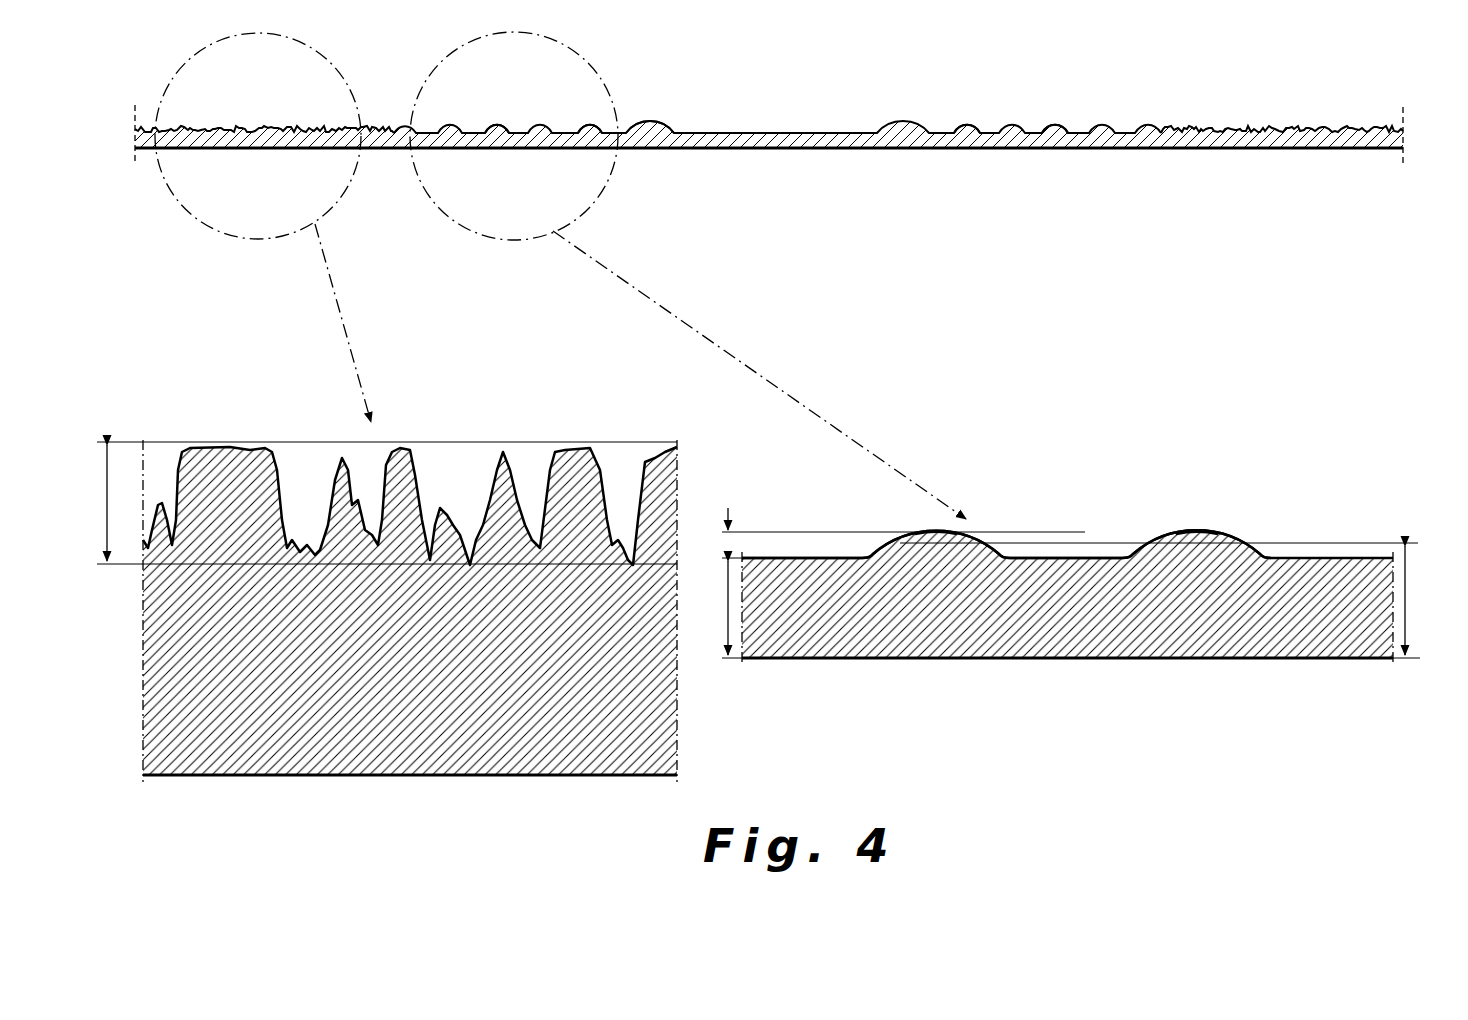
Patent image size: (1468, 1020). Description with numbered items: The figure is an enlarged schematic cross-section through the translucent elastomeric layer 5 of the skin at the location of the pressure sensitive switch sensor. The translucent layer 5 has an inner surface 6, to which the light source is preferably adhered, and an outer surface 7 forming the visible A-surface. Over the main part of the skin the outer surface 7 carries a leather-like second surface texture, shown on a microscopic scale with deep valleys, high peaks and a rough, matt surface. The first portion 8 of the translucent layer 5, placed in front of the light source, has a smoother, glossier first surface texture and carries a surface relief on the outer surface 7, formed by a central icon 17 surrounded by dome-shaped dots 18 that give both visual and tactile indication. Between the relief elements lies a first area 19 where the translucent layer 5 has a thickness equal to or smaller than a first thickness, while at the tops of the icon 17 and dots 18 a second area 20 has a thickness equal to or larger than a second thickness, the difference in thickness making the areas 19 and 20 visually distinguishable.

The translucent elastomeric layer 5 is at (1403, 141).
The inner surface 6 is at (1277, 150).
The outer surface 7 is at (1283, 126).
The first portion 8 is at (795, 124).
The central icon 17 is at (652, 122).
The dots 18 is at (497, 127).
The first area 19 is at (833, 558).
The second area 20 is at (940, 532).